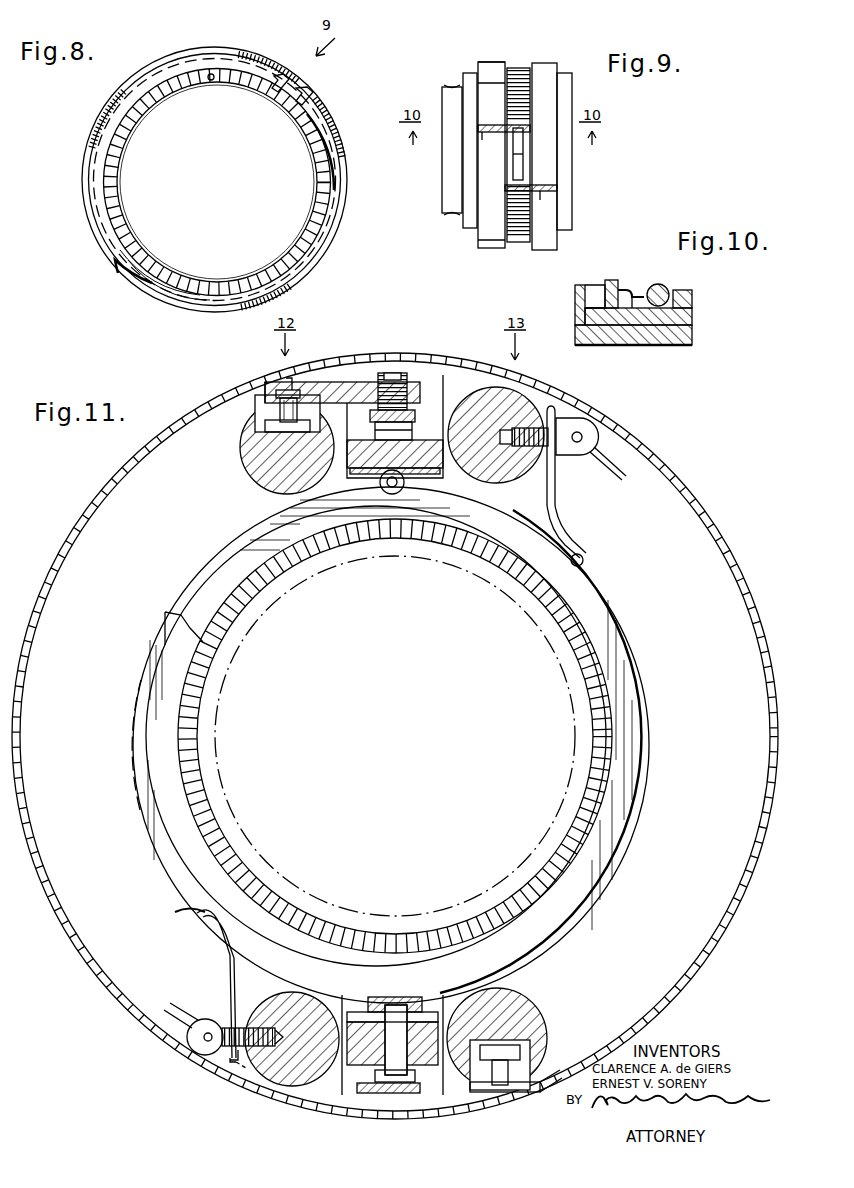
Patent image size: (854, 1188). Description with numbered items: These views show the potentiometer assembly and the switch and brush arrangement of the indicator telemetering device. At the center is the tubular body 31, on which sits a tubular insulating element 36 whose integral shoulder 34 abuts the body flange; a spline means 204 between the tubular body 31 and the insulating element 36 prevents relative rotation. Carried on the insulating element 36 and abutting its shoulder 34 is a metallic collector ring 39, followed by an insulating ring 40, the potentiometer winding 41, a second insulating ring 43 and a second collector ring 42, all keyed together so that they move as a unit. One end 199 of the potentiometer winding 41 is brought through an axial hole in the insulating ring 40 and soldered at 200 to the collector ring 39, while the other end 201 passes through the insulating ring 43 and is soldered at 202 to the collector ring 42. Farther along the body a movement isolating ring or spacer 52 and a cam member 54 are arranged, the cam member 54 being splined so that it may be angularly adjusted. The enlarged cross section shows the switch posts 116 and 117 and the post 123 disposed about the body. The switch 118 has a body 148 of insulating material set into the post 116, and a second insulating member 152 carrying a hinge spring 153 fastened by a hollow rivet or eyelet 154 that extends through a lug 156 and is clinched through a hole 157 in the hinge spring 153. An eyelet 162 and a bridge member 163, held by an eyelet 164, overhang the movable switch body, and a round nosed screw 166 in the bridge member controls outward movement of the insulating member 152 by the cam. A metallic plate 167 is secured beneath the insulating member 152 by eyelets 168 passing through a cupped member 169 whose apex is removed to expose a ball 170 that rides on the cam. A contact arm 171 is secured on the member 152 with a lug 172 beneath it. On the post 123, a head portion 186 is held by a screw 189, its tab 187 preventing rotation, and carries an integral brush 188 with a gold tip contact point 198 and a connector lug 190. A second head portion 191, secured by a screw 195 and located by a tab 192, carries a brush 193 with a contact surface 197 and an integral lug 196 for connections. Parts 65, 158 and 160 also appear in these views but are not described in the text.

In FIG. 8, the tubular body 31 is at (120, 196).
In FIG. 10, the tubular body 31 is at (692, 336).
In FIG. 11, the tubular body 31 is at (440, 547).
In FIG. 9, the shoulder 34 is at (448, 84).
In FIG. 10, the shoulder 34 is at (592, 284).
In FIG. 8, the tubular insulating element 36 is at (182, 93).
In FIG. 10, the tubular insulating element 36 is at (692, 318).
In FIG. 9, the collector ring 39 is at (470, 72).
In FIG. 10, the collector ring 39 is at (606, 279).
In FIG. 9, the insulating ring 40 is at (487, 60).
In FIG. 10, the insulating ring 40 is at (632, 322).
In FIG. 8, the potentiometer winding 41 is at (249, 56).
In FIG. 9, the potentiometer winding 41 is at (518, 66).
In FIG. 10, the potentiometer winding 41 is at (664, 284).
In FIG. 9, the collector ring 42 is at (566, 76).
In FIG. 9, the insulating ring 43 is at (544, 70).
In FIG. 10, the insulating ring 43 is at (692, 299).
In FIG. 11, the movement isolating ring 52 is at (136, 774).
In FIG. 11, the cam member 54 is at (212, 586).
In FIG. 11, the pitch circle 65 is at (580, 674).
In FIG. 11, the post 116 is at (256, 458).
In FIG. 11, the post 117 is at (512, 1000).
In FIG. 11, the switch 118 is at (356, 374).
In FIG. 11, the post 123 is at (496, 386).
In FIG. 11, the body of insulating material 148 is at (262, 422).
In FIG. 11, the insulating member 152 is at (452, 438).
In FIG. 11, the hinge spring 153 is at (442, 1103).
In FIG. 11, the hollow rivet 154 is at (352, 1012).
In FIG. 11, the lug 156 is at (404, 1095).
In FIG. 11, the hole 157 is at (382, 1092).
In FIG. 11, the bolt 158 is at (490, 1085).
In FIG. 11, the lever 160 is at (520, 1086).
In FIG. 11, the eyelet 162 is at (528, 1092).
In FIG. 11, the bridge member 163 is at (316, 382).
In FIG. 11, the eyelet 164 is at (288, 380).
In FIG. 11, the round nosed screw 166 is at (396, 370).
In FIG. 11, the metallic plate 167 is at (345, 478).
In FIG. 11, the eyelets 168 is at (416, 1012).
In FIG. 11, the cupped member 169 is at (380, 486).
In FIG. 11, the ball 170 is at (390, 495).
In FIG. 11, the contact arm 171 is at (428, 405).
In FIG. 11, the lug 172 is at (388, 372).
In FIG. 11, the head portion 186 is at (240, 1070).
In FIG. 11, the tab 187 is at (250, 1092).
In FIG. 11, the brush 188 is at (220, 948).
In FIG. 11, the screw 189 is at (226, 1026).
In FIG. 11, the connector lug 190 is at (202, 1020).
In FIG. 11, the second head portion 191 is at (550, 428).
In FIG. 11, the tab 192 is at (549, 405).
In FIG. 11, the brush 193 is at (553, 518).
In FIG. 11, the screw 195 is at (598, 447).
In FIG. 11, the lug 196 is at (582, 428).
In FIG. 11, the contact surface 197 is at (585, 560).
In FIG. 11, the contact point 198 is at (198, 912).
In FIG. 9, the winding end 199 is at (484, 134).
In FIG. 10, the winding end 199 is at (634, 292).
In FIG. 9, the solder joint 200 is at (478, 128).
In FIG. 10, the solder joint 200 is at (626, 288).
In FIG. 9, the winding end 201 is at (548, 192).
In FIG. 9, the solder joint 202 is at (552, 188).
In FIG. 8, the spline means 204 is at (212, 82).